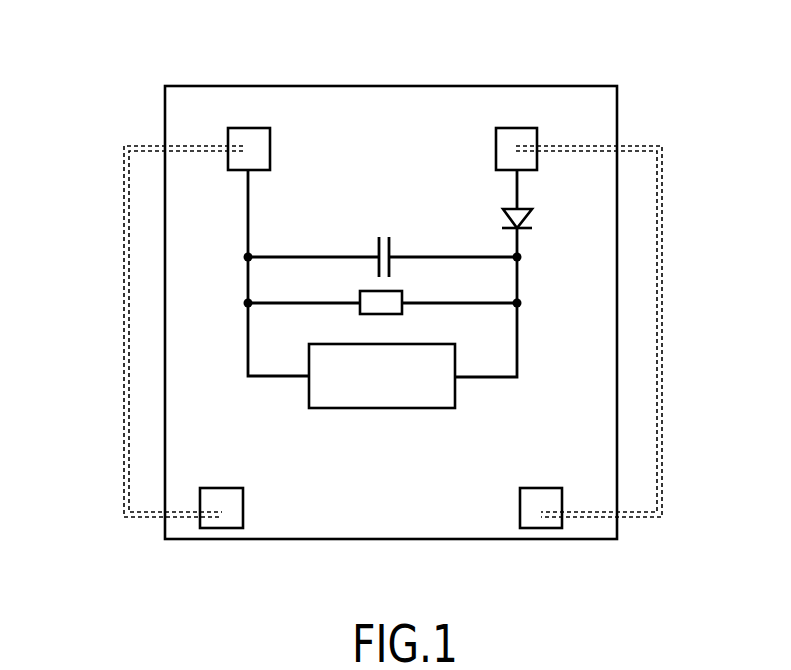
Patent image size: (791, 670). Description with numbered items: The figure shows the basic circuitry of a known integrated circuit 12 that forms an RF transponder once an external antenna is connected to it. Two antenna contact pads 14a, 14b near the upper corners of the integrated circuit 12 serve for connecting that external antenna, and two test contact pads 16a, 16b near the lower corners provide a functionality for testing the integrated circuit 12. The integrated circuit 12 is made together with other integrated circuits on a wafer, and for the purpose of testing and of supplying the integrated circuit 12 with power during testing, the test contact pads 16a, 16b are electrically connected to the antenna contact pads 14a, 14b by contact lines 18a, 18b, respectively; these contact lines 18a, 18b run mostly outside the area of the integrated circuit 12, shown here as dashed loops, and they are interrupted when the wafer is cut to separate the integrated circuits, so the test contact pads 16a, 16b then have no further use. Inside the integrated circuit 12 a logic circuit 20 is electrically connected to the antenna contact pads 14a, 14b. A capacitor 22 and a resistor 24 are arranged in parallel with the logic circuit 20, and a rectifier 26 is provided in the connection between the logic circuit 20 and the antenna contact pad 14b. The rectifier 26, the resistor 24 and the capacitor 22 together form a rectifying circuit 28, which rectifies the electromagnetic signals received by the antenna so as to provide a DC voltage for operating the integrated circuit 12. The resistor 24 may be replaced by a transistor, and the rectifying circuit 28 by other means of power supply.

The integrated circuit 12 is at (617, 103).
The antenna contact pad 14a is at (253, 141).
The antenna contact pad 14b is at (520, 141).
The test contact pad 16a is at (233, 513).
The test contact pad 16b is at (530, 513).
The contact line 18a is at (125, 348).
The contact line 18b is at (662, 348).
The logic circuit 20 is at (382, 402).
The capacitor 22 is at (390, 216).
The resistor 24 is at (402, 308).
The rectifier 26 is at (545, 238).
The rectifying circuit 28 is at (230, 292).